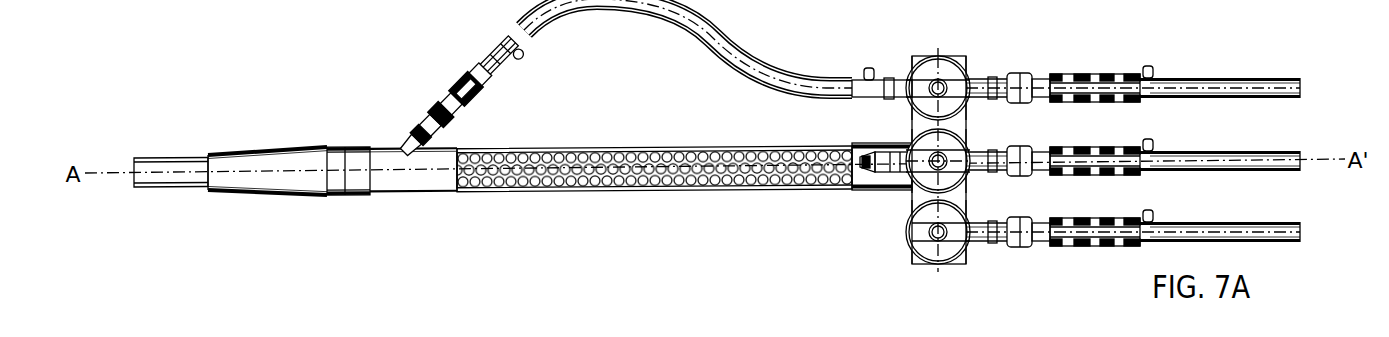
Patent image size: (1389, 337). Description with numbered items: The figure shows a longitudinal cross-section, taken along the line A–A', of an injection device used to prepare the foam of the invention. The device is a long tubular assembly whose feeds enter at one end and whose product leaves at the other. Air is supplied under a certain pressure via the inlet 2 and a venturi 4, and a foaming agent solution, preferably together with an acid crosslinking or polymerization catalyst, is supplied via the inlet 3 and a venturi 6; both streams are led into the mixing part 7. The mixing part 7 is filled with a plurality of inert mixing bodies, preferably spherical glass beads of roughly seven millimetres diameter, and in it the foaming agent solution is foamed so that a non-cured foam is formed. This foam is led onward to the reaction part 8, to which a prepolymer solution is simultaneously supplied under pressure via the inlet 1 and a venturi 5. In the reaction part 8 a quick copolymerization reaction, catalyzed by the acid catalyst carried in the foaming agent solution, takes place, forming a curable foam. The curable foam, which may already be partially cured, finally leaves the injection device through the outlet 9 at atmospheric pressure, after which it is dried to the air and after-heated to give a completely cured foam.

The inlet 1 is at (1285, 84).
The inlet 2 is at (1298, 160).
The inlet 3 is at (1292, 232).
The venturi 4 is at (946, 56).
The venturi 5 is at (952, 148).
The venturi 6 is at (952, 252).
The mixing part 7 is at (758, 190).
The reaction part 8 is at (410, 178).
The outlet 9 is at (143, 188).